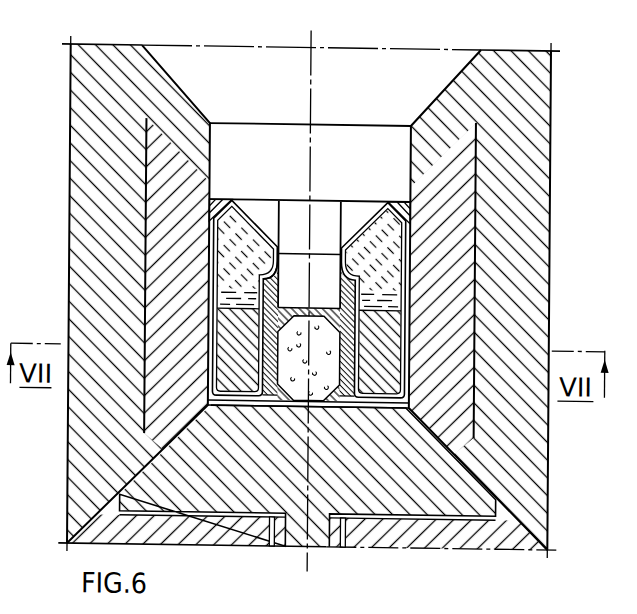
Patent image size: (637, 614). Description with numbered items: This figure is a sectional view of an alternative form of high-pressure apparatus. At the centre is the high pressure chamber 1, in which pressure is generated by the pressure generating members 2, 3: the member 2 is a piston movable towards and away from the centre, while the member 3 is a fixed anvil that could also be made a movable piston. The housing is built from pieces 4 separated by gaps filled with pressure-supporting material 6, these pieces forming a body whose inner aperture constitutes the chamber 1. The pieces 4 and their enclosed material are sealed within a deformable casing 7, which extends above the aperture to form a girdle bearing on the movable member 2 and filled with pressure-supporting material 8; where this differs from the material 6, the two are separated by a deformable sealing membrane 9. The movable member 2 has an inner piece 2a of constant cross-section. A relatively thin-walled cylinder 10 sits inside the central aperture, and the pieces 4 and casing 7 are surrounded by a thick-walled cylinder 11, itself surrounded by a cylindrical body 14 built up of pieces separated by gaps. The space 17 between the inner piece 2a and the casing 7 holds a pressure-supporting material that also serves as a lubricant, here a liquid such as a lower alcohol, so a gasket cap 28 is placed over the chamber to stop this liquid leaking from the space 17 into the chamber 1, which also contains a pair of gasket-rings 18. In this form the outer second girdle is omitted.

The high pressure chamber 1 is at (329, 347).
The pressure generating member 2 is at (242, 136).
The inner piece 2a is at (312, 264).
The pressure generating member 3 is at (424, 452).
The pieces 4 is at (394, 349).
The pressure-supporting material 6 is at (409, 299).
The casing 7 is at (410, 236).
The pressure-supporting material 8 is at (402, 256).
The sealing membrane 9 is at (225, 292).
The cylinder 10 is at (350, 369).
The cylinder 11 is at (470, 188).
The cylindrical body 14 is at (80, 504).
The space 17 is at (269, 276).
The gasket-rings 18 is at (215, 321).
The gasket cap 28 is at (280, 340).